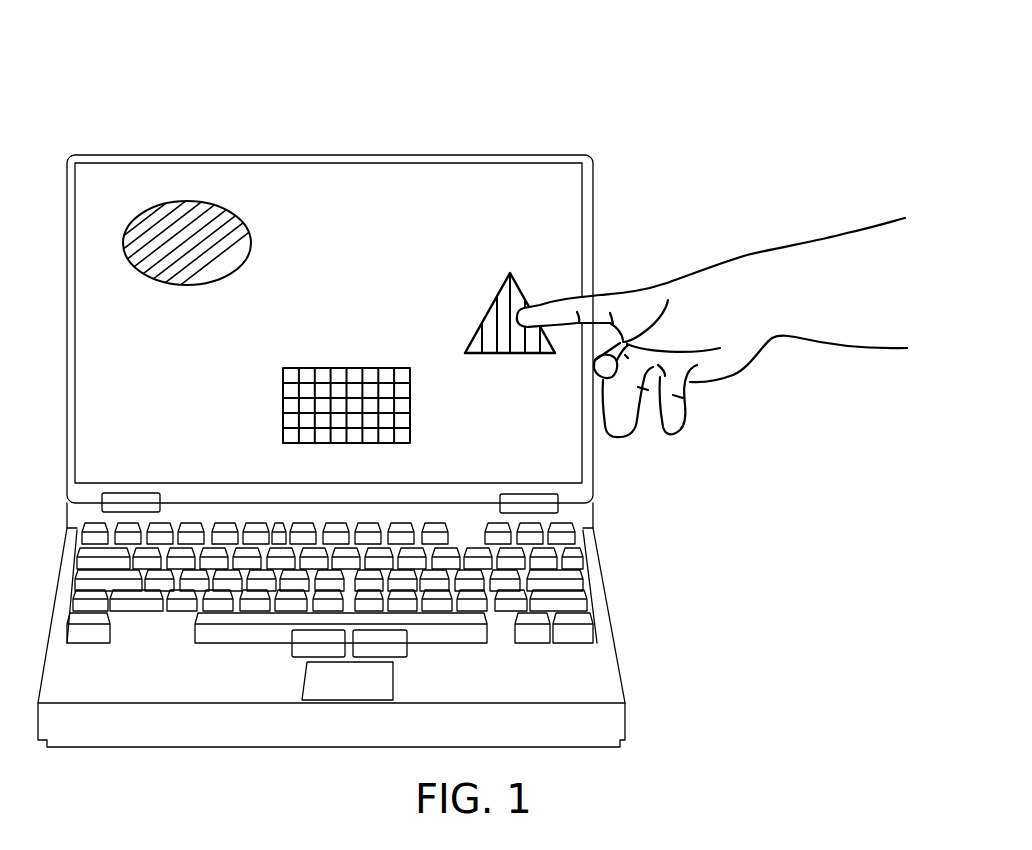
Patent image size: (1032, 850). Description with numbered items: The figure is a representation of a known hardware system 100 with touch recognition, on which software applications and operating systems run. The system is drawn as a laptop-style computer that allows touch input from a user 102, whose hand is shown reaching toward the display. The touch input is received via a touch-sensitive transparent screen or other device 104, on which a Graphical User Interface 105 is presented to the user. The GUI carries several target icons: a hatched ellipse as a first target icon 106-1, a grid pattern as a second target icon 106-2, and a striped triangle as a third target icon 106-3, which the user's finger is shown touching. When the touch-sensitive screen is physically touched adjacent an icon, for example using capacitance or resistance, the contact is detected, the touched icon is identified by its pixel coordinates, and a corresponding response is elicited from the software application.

The hardware system 100 is at (631, 66).
The user 102 is at (808, 240).
The touch-sensitive transparent screen 104 is at (594, 192).
The Graphical User Interface 105 is at (442, 216).
The target icon 106-1 is at (252, 243).
The target icon 106-2 is at (337, 368).
The target icon 106-3 is at (502, 355).